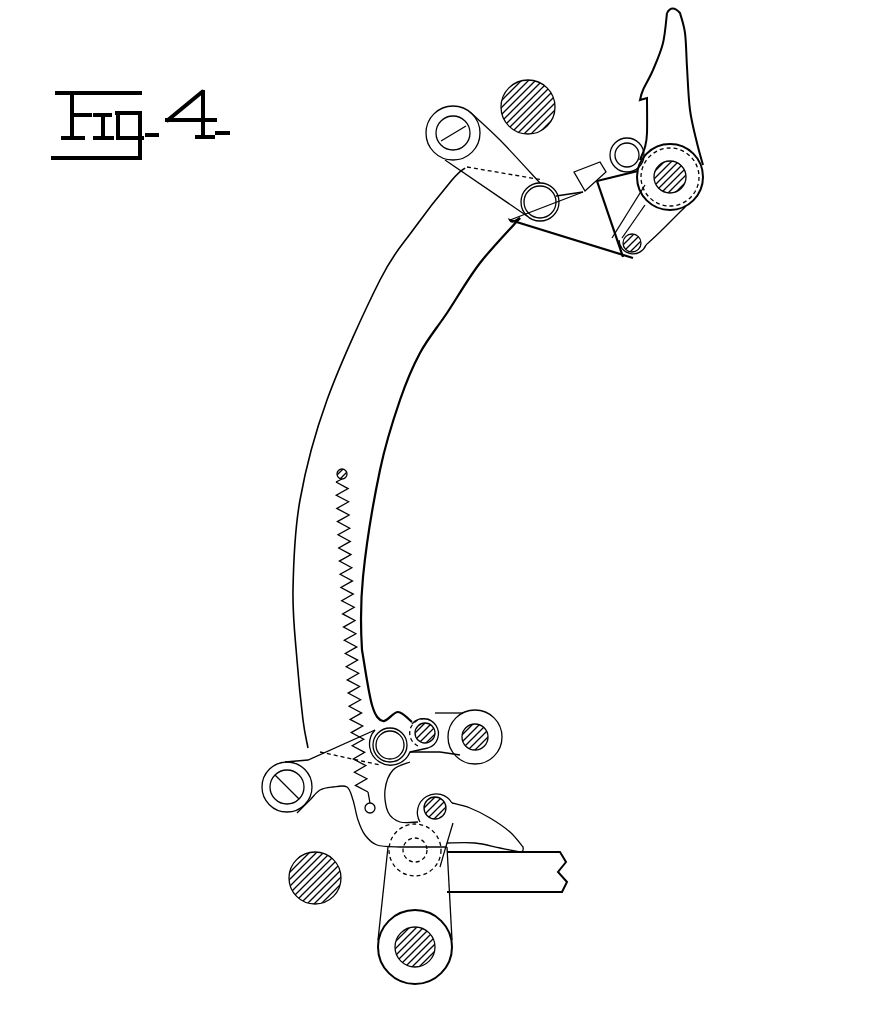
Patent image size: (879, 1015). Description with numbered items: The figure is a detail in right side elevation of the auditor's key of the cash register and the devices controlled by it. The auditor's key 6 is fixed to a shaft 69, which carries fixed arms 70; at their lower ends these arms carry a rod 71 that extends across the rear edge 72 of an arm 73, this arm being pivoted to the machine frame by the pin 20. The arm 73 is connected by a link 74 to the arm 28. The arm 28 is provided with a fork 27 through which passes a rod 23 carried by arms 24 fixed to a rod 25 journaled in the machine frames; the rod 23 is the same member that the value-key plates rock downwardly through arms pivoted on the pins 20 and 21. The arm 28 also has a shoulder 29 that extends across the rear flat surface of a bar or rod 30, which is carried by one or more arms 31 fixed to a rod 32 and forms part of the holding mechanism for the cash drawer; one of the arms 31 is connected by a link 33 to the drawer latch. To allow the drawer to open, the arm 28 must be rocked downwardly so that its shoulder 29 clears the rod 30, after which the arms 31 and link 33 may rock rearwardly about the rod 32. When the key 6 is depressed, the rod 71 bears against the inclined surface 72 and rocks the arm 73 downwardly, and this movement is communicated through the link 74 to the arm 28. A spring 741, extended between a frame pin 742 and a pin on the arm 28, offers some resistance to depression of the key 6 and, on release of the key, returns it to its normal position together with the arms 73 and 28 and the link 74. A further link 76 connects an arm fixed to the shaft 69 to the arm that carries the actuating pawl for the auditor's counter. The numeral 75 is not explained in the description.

The auditor's key 6 is at (693, 98).
The pin 20 is at (448, 132).
The pin 21 is at (280, 793).
The rod 23 is at (433, 727).
The arms 24 is at (467, 718).
The rod 25 is at (487, 733).
The fork 27 is at (417, 717).
The arm 28 is at (323, 790).
The shoulder 29 is at (447, 810).
The bar or rod 30 is at (450, 820).
The arms 31 is at (388, 910).
The rod 32 is at (417, 947).
The link 33 is at (530, 883).
The shaft 69 is at (677, 175).
The arms 70 is at (663, 230).
The rod 71 is at (640, 247).
The rear edge 72 is at (613, 217).
The arm 73 is at (567, 238).
The link 74 is at (408, 428).
The pivot 75 is at (650, 147).
The link 76 is at (602, 168).
The spring 741 is at (362, 573).
The frame pin 742 is at (347, 471).